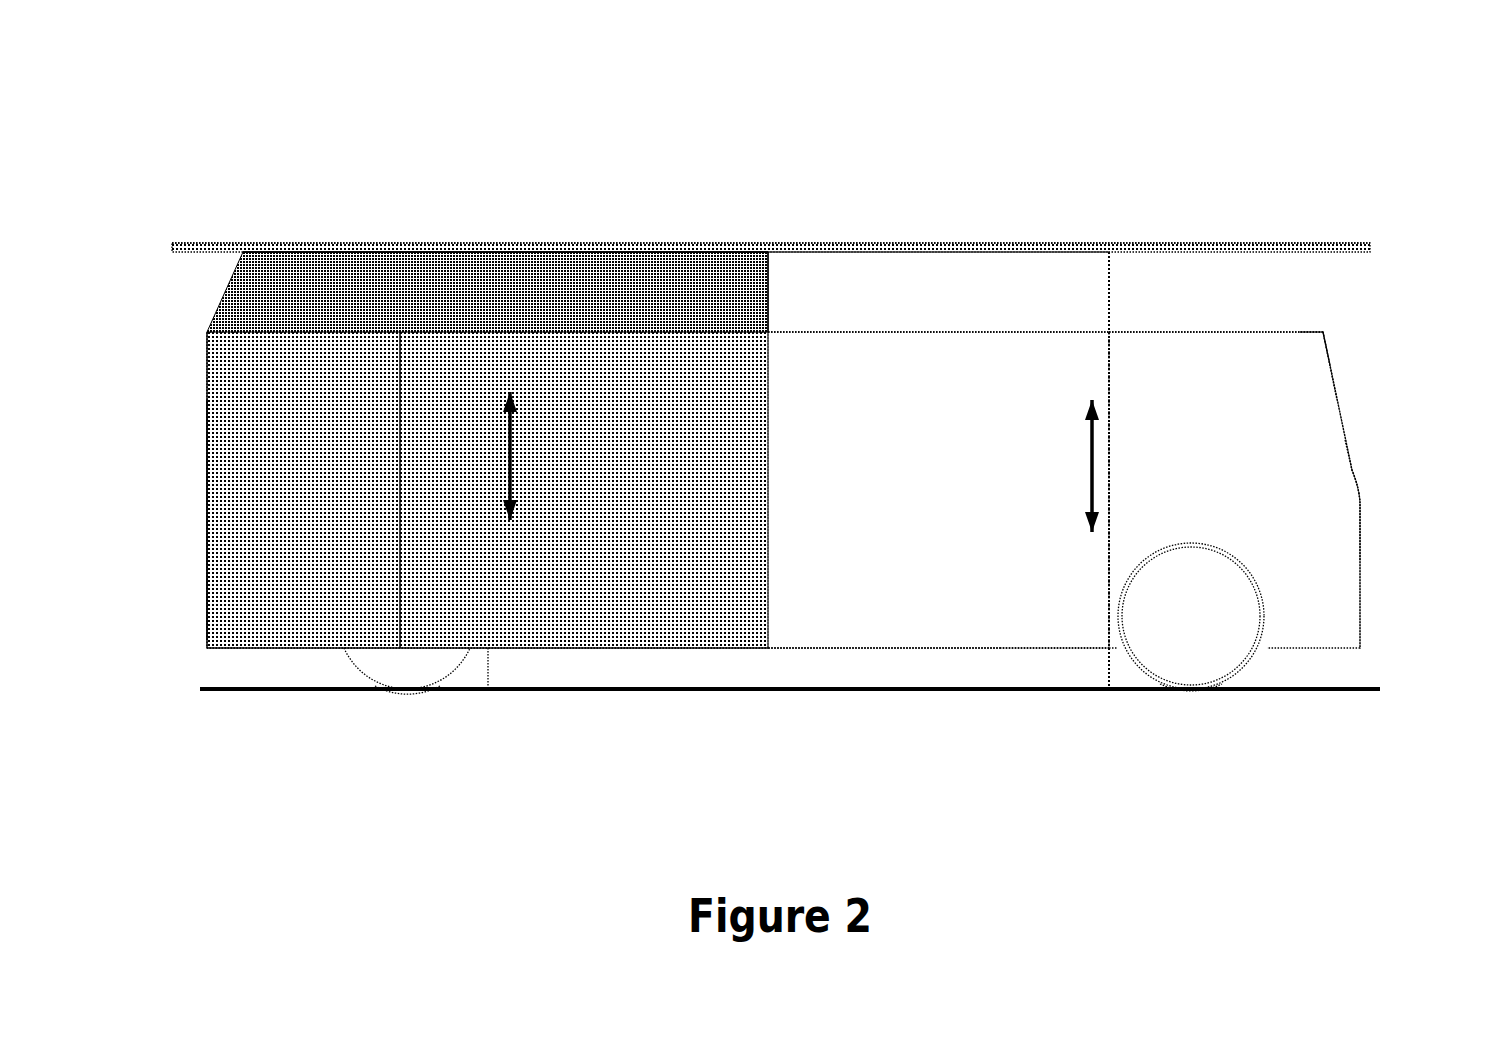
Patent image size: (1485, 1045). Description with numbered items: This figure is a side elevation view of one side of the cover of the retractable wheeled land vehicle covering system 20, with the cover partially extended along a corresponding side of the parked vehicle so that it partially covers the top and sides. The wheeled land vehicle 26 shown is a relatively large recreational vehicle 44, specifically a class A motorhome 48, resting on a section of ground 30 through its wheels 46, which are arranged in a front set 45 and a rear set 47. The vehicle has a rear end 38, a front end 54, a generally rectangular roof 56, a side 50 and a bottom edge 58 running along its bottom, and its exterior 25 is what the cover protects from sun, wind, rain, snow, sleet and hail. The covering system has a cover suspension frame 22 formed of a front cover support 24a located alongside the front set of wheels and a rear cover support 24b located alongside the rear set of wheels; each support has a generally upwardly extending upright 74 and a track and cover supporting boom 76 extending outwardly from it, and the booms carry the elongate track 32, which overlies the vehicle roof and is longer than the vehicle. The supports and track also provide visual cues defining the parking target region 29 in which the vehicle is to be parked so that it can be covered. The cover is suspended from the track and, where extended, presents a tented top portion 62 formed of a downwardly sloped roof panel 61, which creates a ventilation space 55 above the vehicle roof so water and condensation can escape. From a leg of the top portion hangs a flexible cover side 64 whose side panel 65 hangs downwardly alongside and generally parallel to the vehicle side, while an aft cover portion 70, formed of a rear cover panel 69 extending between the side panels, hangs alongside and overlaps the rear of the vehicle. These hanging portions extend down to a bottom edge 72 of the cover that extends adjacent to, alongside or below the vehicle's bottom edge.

The retractable wheeled land vehicle covering system 20 is at (247, 188).
The cover suspension frame 22 is at (1135, 227).
The front cover support 24a is at (1125, 287).
The rear cover support 24b is at (500, 667).
The exterior 25 is at (932, 497).
The wheeled land vehicle 26 is at (1350, 365).
The wheeled land vehicle parking target region 29 is at (1300, 689).
The ground 30 is at (1353, 689).
The track 32 is at (192, 243).
The rear end 38 is at (205, 347).
The recreational vehicle 44 is at (1345, 318).
The front set of wheels 45 is at (1215, 687).
The wheels 46 is at (414, 660).
The rear set of wheels 47 is at (382, 691).
The class A motorhome 48 is at (1322, 293).
The side of the vehicle 50 is at (903, 660).
The front end 54 is at (1360, 450).
The ventilation space 55 is at (770, 295).
The roof 56 is at (1028, 330).
The bottom edge of the vehicle 58 is at (1014, 652).
The roof panel 61 is at (358, 262).
The tented top portion of the cover 62 is at (597, 250).
The side of the cover 64 is at (680, 598).
The side panel 65 is at (425, 533).
The rear cover panel 69 is at (210, 517).
The aft cover portion 70 is at (205, 447).
The bottom edge of the cover 72 is at (272, 647).
The upright 74 is at (491, 563).
The boom 76 is at (490, 248).